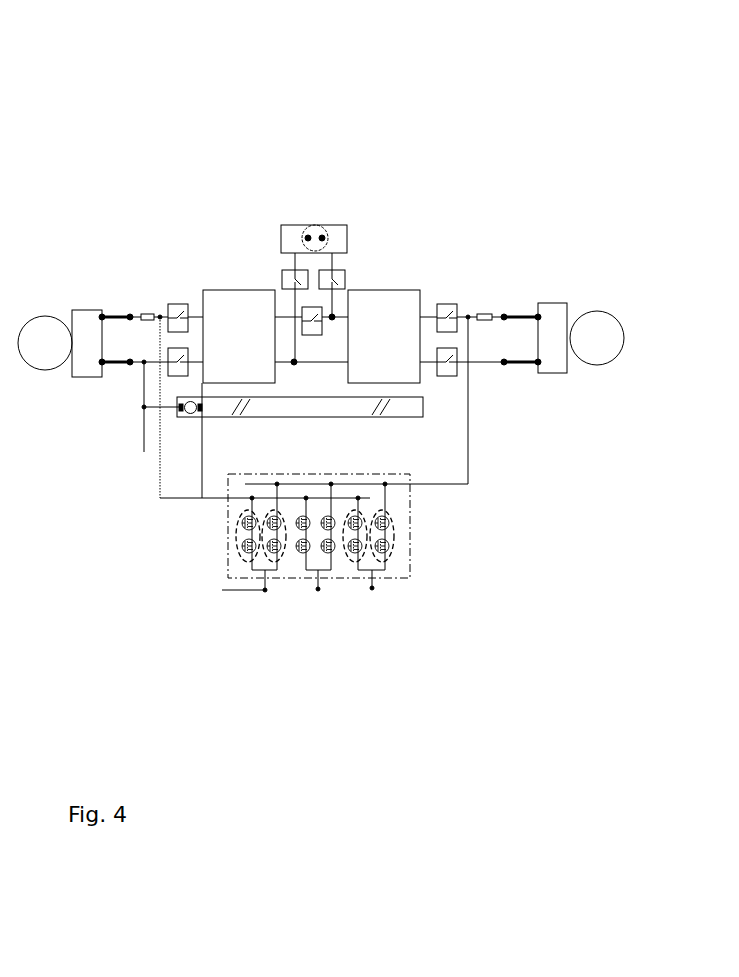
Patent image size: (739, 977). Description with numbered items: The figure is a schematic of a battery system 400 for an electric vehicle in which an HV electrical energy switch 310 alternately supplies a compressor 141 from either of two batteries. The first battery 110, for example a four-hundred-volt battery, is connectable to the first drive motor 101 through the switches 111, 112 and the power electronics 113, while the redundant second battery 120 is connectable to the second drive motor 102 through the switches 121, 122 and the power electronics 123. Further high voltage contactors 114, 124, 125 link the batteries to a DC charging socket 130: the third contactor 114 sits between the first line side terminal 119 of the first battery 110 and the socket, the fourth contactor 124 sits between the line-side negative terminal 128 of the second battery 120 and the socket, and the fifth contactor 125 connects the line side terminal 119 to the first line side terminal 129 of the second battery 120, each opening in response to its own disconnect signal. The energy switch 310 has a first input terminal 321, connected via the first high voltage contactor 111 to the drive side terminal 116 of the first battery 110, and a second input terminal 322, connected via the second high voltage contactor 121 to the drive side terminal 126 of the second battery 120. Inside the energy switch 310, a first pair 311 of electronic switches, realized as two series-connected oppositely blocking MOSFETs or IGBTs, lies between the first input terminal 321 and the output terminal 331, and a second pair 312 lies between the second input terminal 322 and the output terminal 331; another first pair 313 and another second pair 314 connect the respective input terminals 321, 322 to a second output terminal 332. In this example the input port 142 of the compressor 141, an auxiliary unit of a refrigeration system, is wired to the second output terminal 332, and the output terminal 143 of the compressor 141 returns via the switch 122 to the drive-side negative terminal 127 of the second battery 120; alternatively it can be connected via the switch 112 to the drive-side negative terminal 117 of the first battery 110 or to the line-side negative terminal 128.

The battery system 400 is at (75, 62).
The first drive motor 101 is at (595, 297).
The second drive motor 102 is at (37, 298).
The first battery 110 is at (405, 286).
The first high voltage contactor 111 is at (447, 302).
The switch 112 is at (460, 372).
The power electronics 113 is at (552, 285).
The third high voltage contactor 114 is at (345, 272).
The drive side terminal 116 is at (428, 322).
The drive-side negative terminal 117 is at (428, 366).
The first line side terminal 119 is at (335, 322).
The second battery 120 is at (212, 288).
The second high voltage contactor 121 is at (178, 302).
The switch 122 is at (170, 378).
The power electronics 123 is at (88, 260).
The fourth high-voltage contactor 124 is at (280, 278).
The fifth high voltage contactor 125 is at (313, 333).
The drive side terminal 126 is at (195, 322).
The drive-side negative terminal 127 is at (195, 368).
The line-side negative terminal 128 is at (287, 366).
The first line side terminal 129 is at (285, 322).
The DC charging socket 130 is at (312, 197).
The compressor 141 is at (426, 412).
The input port 142 is at (202, 424).
The output terminal 143 is at (143, 409).
The electrical power switch 310 is at (414, 563).
The first pair of electronic switches 311 is at (389, 559).
The second pair of electronic switches 312 is at (353, 565).
The another first pair of electronic switches 313 is at (281, 561).
The another second pair of electronic switches 314 is at (238, 560).
The first input terminal 321 is at (388, 486).
The second input terminal 322 is at (248, 500).
The output terminal 331 is at (374, 591).
The second output terminal 332 is at (265, 593).